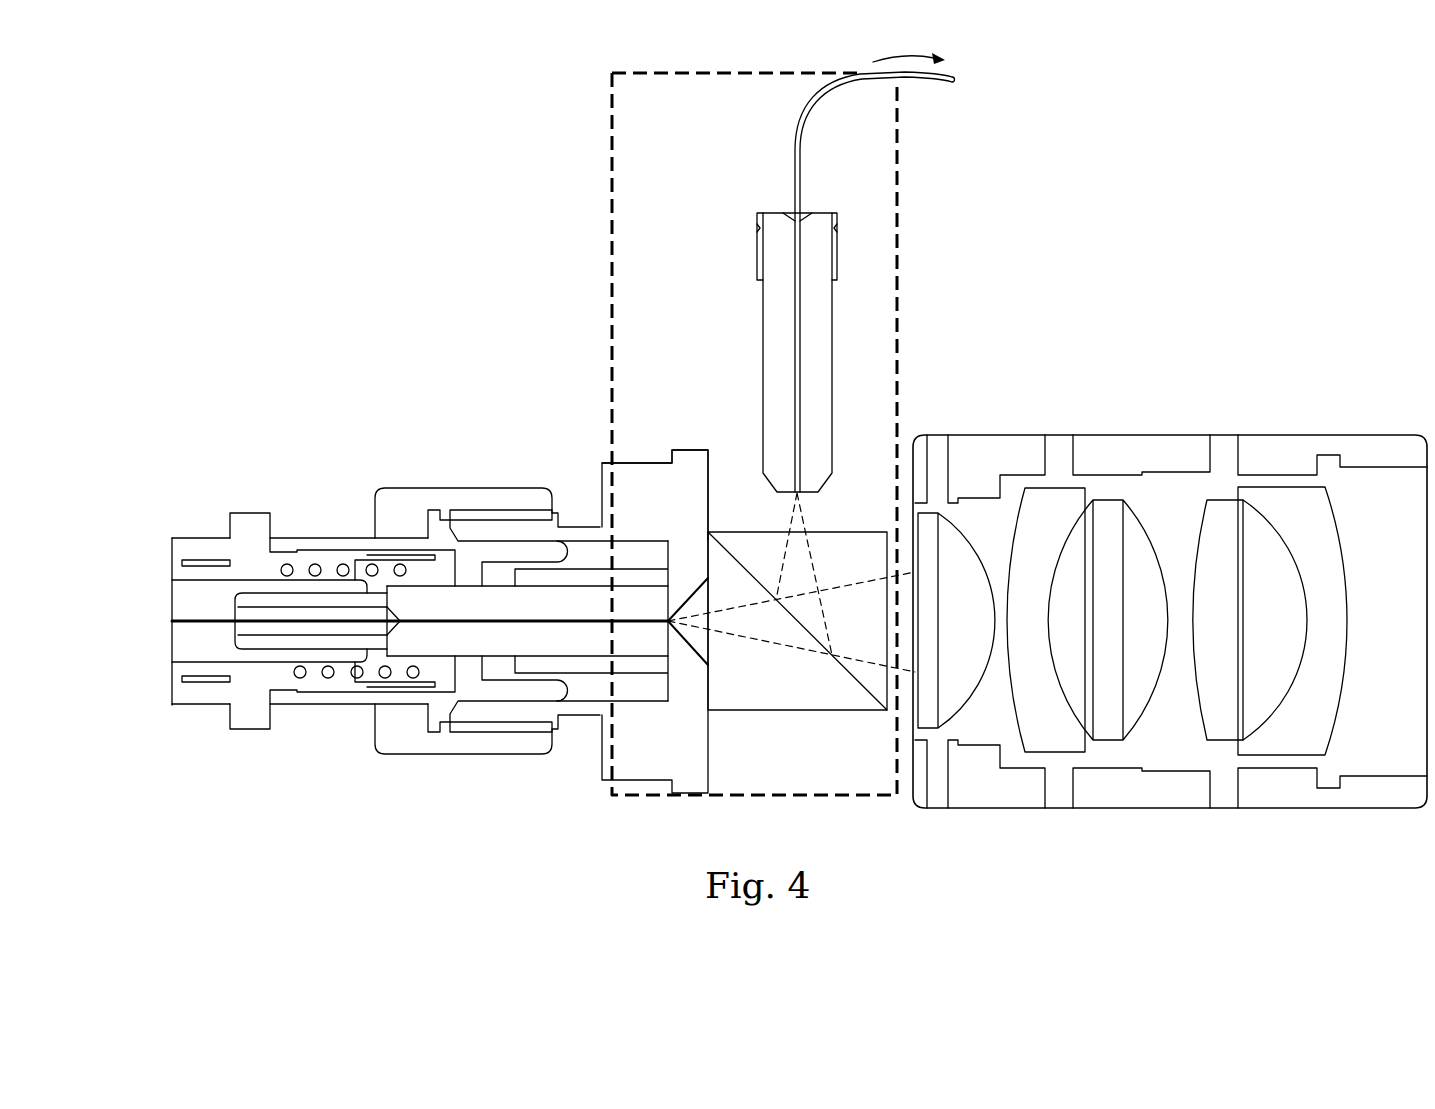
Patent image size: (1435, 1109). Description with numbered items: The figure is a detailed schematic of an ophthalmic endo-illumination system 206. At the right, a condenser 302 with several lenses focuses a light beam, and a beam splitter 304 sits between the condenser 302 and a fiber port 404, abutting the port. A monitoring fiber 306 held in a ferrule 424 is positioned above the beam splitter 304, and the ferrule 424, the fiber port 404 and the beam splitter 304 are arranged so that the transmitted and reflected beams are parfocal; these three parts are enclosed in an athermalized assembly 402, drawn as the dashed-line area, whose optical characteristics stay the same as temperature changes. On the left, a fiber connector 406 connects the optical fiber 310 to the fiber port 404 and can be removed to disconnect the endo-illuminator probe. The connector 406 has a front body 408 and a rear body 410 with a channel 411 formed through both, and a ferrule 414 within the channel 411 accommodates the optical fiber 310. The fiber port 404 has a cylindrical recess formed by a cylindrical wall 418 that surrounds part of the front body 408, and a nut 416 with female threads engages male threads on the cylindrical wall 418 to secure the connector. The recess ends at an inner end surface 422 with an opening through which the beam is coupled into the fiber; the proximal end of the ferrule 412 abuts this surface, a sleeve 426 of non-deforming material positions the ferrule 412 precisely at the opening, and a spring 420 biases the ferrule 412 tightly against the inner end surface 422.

The ophthalmic endo-illumination system 206 is at (1135, 200).
The condenser 302 is at (1287, 428).
The beam splitter 304 is at (797, 712).
The monitoring fiber 306 is at (795, 325).
The optical fiber 310 is at (196, 618).
The athermalized assembly 402 is at (603, 266).
The fiber port 404 is at (631, 770).
The fiber connector 406 is at (551, 430).
The front body 408 is at (498, 690).
The rear body 410 is at (248, 522).
The channel 411 is at (183, 648).
The ferrule 412 is at (400, 644).
The ferrule 414 is at (582, 643).
The nut 416 is at (462, 498).
The cylindrical wall 418 is at (637, 473).
The spring 420 is at (297, 680).
The inner end surface 422 is at (668, 598).
The ferrule 424 is at (772, 394).
The sleeve 426 is at (643, 663).